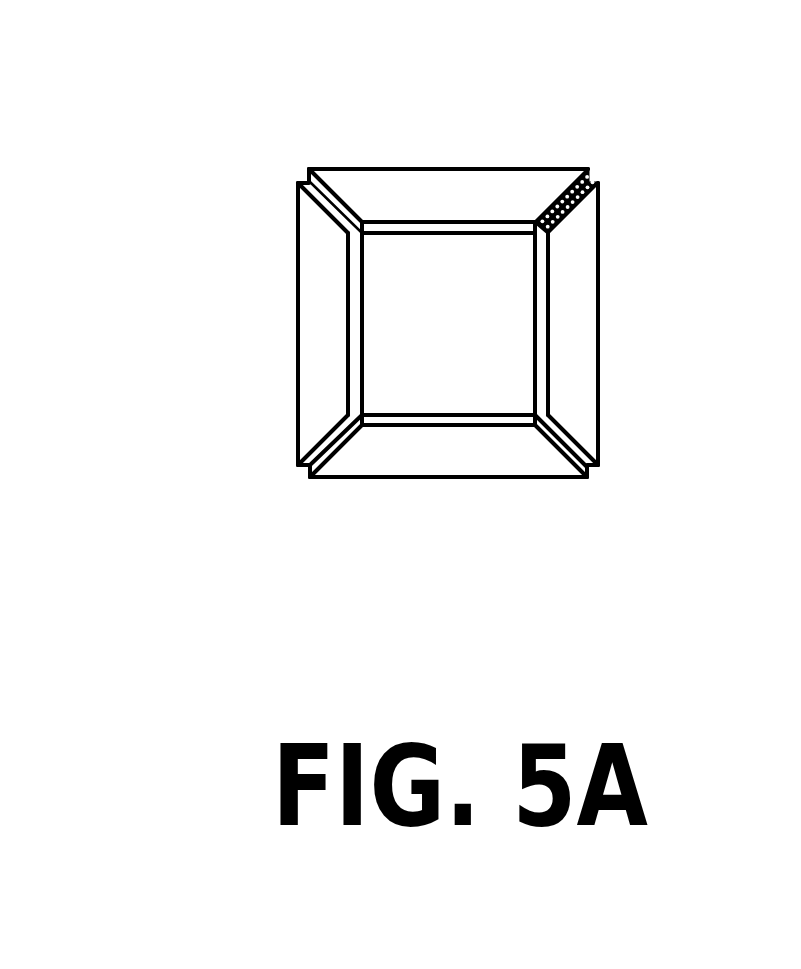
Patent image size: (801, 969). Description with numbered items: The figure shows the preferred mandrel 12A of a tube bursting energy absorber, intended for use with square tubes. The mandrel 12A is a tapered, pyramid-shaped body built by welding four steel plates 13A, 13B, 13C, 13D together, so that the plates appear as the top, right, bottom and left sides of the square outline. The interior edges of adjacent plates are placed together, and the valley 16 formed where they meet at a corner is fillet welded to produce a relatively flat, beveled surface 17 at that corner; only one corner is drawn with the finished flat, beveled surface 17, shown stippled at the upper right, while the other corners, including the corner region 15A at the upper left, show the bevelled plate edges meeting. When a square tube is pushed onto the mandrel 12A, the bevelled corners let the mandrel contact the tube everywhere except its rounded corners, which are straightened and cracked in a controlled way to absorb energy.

The mandrel 12A is at (493, 152).
The steel plate 13A is at (443, 195).
The steel plate 13B is at (570, 313).
The steel plate 13C is at (445, 452).
The steel plate 13D is at (323, 320).
The corner connector 15A is at (308, 178).
The valley 16 is at (328, 213).
The flat beveled surface 17 is at (592, 181).